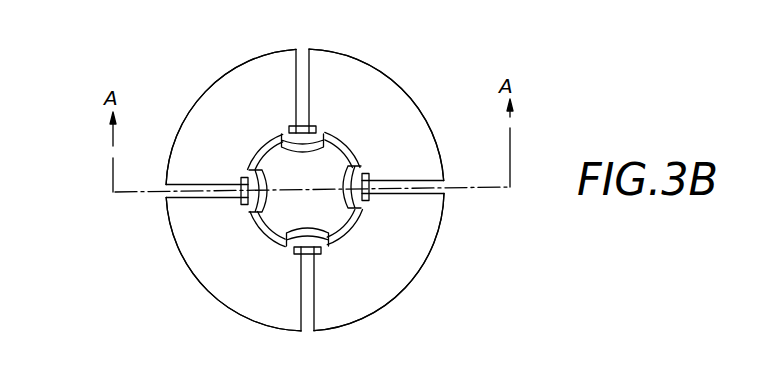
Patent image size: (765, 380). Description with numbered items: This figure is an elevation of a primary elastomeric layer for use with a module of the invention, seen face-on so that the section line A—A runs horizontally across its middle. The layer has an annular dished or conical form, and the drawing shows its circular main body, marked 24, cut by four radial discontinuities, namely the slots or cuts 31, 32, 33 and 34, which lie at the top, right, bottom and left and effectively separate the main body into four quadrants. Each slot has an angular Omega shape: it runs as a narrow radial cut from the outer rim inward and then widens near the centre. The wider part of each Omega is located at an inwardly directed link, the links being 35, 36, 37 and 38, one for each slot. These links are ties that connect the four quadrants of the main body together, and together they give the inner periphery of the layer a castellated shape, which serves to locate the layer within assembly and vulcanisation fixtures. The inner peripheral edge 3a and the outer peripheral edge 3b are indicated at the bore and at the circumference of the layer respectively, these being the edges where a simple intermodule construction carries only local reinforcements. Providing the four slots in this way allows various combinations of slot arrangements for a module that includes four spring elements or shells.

The collet body 24 is at (310, 184).
The slot 31 is at (305, 50).
The slot 32 is at (445, 190).
The slot 33 is at (305, 329).
The slot 34 is at (167, 185).
The inwardly directed link 35 is at (376, 114).
The inwardly directed link 36 is at (379, 262).
The inwardly directed link 37 is at (233, 264).
The inwardly directed link 38 is at (231, 116).
The inner peripheral edge 3a is at (352, 229).
The outer peripheral edge 3b is at (432, 250).